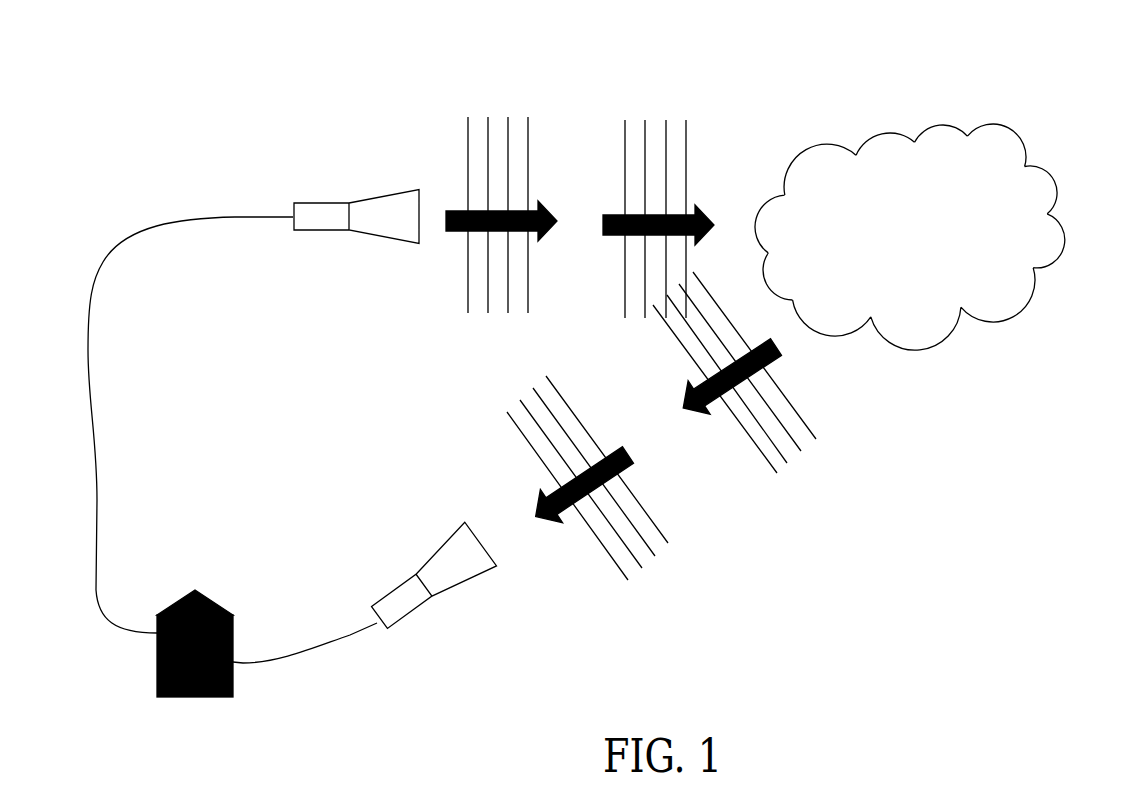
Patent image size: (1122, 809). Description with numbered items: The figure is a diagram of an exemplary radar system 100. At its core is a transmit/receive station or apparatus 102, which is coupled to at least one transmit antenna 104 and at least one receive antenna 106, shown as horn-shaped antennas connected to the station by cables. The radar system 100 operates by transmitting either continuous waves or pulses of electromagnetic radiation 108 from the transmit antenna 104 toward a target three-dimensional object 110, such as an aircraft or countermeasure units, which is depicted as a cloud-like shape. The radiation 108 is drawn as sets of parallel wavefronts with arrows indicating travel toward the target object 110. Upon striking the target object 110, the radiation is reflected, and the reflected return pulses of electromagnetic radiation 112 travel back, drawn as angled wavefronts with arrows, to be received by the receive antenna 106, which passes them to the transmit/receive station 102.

The radar system 100 is at (95, 103).
The transmit/receive station 102 is at (157, 655).
The transmit antenna 104 is at (322, 232).
The receive antenna 106 is at (400, 583).
The electromagnetic radiation 108 is at (538, 240).
The target three-dimensional object 110 is at (927, 347).
The reflected return pulses of electromagnetic radiation 112 is at (700, 413).